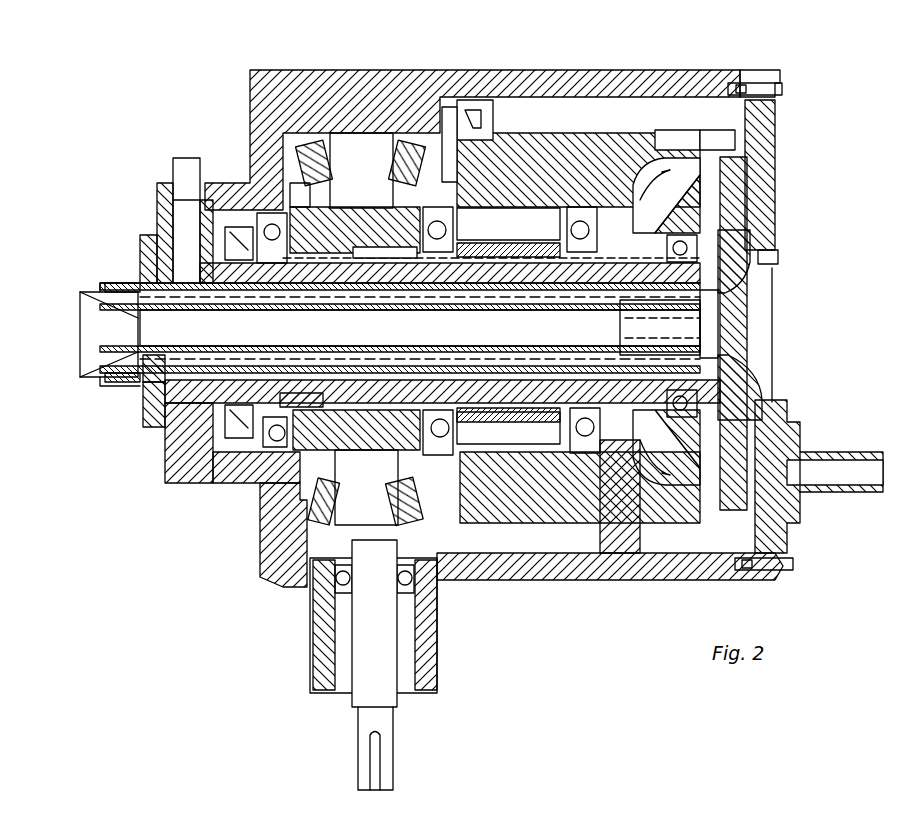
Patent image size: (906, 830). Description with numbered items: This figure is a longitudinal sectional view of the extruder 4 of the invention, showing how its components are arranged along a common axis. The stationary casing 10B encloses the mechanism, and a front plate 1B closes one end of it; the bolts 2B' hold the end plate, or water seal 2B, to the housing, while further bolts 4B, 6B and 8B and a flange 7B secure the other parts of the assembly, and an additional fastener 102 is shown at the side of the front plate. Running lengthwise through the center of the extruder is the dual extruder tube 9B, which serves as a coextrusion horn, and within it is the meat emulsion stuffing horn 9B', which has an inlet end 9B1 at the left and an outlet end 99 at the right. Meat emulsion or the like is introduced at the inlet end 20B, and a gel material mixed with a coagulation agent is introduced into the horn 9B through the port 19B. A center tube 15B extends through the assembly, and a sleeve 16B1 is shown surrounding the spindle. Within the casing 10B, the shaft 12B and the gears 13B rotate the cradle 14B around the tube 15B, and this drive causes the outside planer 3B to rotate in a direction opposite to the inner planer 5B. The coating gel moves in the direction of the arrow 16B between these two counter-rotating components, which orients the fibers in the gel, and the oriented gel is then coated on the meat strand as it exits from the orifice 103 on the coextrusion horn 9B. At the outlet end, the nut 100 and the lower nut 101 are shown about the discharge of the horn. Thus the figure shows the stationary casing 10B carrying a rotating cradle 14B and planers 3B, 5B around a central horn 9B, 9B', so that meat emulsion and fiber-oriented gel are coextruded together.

The extruder 4 is at (772, 34).
The casing 10B is at (722, 70).
The bolt 2B' is at (804, 321).
The front plate 1B is at (785, 142).
The screw 102 is at (836, 258).
The outside planer 3B is at (748, 181).
The inner planer 5B is at (690, 160).
The bolt 4B is at (690, 172).
The spindle sleeve 16B1 is at (262, 265).
The dual extruder tube 9B is at (465, 312).
The horn 9B' is at (420, 318).
The inlet end 9B1 is at (97, 323).
The flange 7B is at (138, 243).
The port 19B is at (182, 163).
The inlet end 20B is at (150, 382).
The tube 15B is at (78, 357).
The bolt 8B is at (150, 403).
The arrow 16B is at (617, 523).
The cradle 14B is at (648, 523).
The gears 13B is at (267, 540).
The water seal 2B is at (653, 561).
The shaft 12B is at (360, 633).
The clamping nut 100 is at (693, 310).
The lower nut 101 is at (760, 358).
The orifice 103 is at (693, 320).
The outlet end 99 is at (718, 333).
The bolt 6B is at (745, 410).